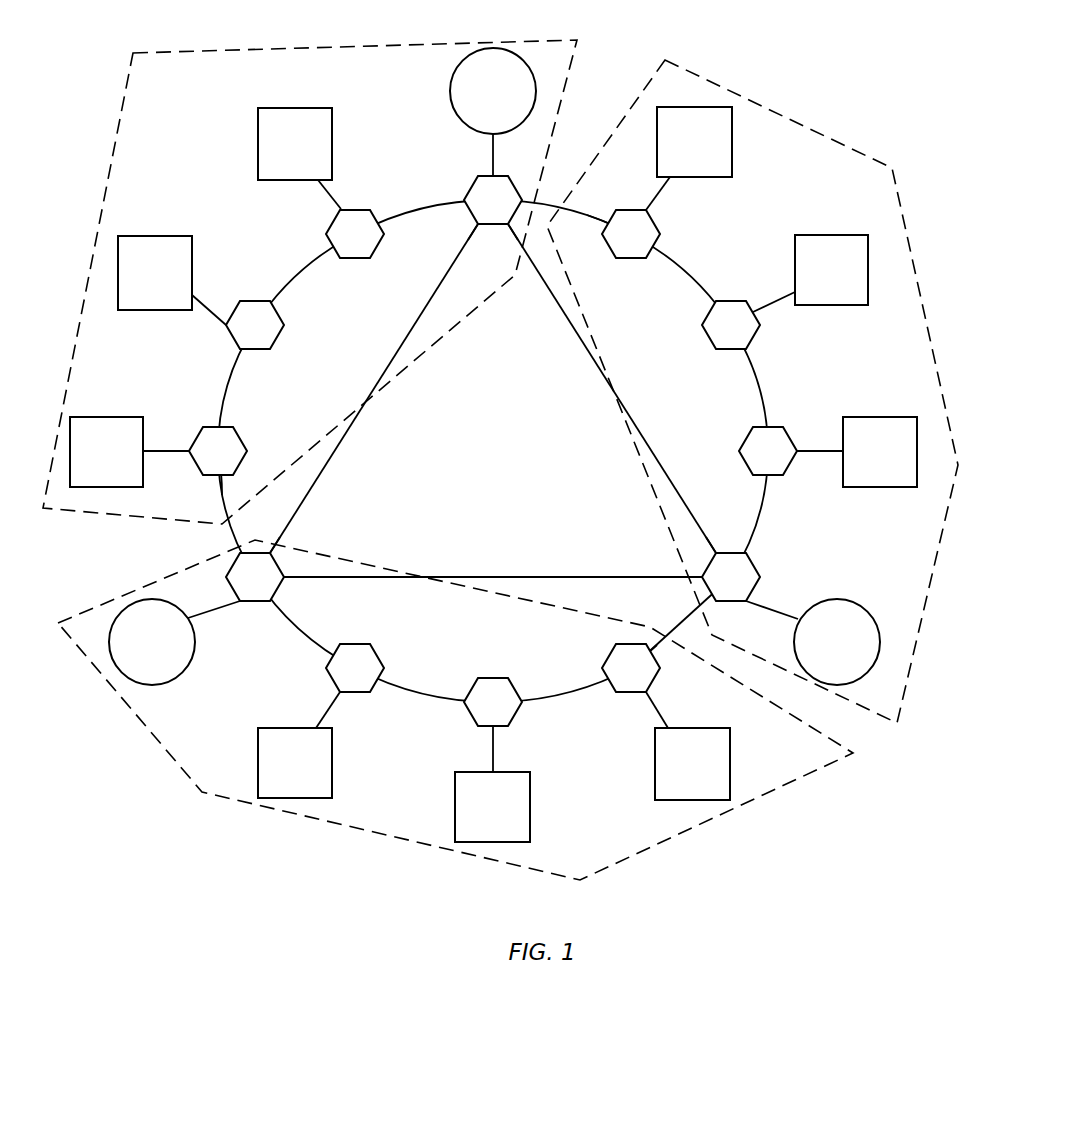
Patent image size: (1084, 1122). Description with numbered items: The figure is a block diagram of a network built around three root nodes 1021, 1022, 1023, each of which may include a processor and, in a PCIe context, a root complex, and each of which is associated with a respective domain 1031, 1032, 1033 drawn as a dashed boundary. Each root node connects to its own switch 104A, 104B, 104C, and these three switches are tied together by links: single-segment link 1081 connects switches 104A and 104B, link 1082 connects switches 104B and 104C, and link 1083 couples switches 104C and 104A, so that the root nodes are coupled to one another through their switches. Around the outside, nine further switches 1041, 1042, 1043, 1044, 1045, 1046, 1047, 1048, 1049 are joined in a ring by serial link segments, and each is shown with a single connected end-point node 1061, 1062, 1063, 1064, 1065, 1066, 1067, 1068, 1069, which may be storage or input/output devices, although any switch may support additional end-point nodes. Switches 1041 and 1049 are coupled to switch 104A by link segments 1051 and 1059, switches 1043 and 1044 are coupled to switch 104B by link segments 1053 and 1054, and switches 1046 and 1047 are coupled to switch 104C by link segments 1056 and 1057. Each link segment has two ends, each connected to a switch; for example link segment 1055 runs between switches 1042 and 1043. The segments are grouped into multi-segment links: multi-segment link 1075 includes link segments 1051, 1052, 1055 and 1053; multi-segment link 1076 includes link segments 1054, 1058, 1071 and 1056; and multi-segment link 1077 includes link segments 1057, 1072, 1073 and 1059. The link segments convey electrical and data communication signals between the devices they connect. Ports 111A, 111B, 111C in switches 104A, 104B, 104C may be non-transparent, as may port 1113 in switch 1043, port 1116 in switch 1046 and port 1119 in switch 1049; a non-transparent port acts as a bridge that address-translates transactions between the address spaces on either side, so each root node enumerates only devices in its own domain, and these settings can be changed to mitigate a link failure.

The domain 1031 is at (301, 45).
The domain 1032 is at (180, 767).
The domain 1033 is at (907, 692).
The root node 1021 is at (473, 103).
The root node 1022 is at (132, 654).
The root node 1023 is at (817, 654).
The switch 104A is at (473, 212).
The switch 104B is at (235, 589).
The switch 104C is at (711, 589).
The switch 1041 is at (335, 246).
The switch 1042 is at (235, 337).
The switch 1043 is at (198, 463).
The switch 1044 is at (335, 680).
The switch 1045 is at (473, 714).
The switch 1046 is at (611, 680).
The switch 1047 is at (748, 463).
The switch 1048 is at (711, 337).
The switch 1049 is at (611, 246).
The link segment 1051 is at (432, 200).
The link segment 1052 is at (305, 266).
The link segment 1053 is at (233, 534).
The link segment 1054 is at (300, 632).
The link segment 1055 is at (229, 377).
The link segment 1056 is at (692, 620).
The link segment 1057 is at (762, 513).
The link segment 1058 is at (437, 700).
The link segment 1059 is at (560, 211).
The end-point node 1061 is at (275, 156).
The end-point node 1062 is at (135, 285).
The end-point node 1063 is at (86, 464).
The end-point node 1064 is at (275, 775).
The end-point node 1065 is at (473, 819).
The end-point node 1066 is at (672, 776).
The end-point node 1067 is at (860, 464).
The end-point node 1068 is at (811, 282).
The end-point node 1069 is at (674, 154).
The link segment 1071 is at (543, 700).
The link segment 1072 is at (758, 378).
The link segment 1073 is at (692, 262).
The multi-segment link 1075 is at (373, 295).
The multi-segment link 1076 is at (413, 629).
The multi-segment link 1077 is at (648, 372).
The single-segment link 1081 is at (400, 345).
The link 1082 is at (535, 577).
The link 1083 is at (665, 468).
The port 111A is at (507, 224).
The port 111B is at (283, 552).
The port 111C is at (700, 577).
The port 1113 is at (215, 478).
The port 1116 is at (658, 670).
The port 1119 is at (600, 234).